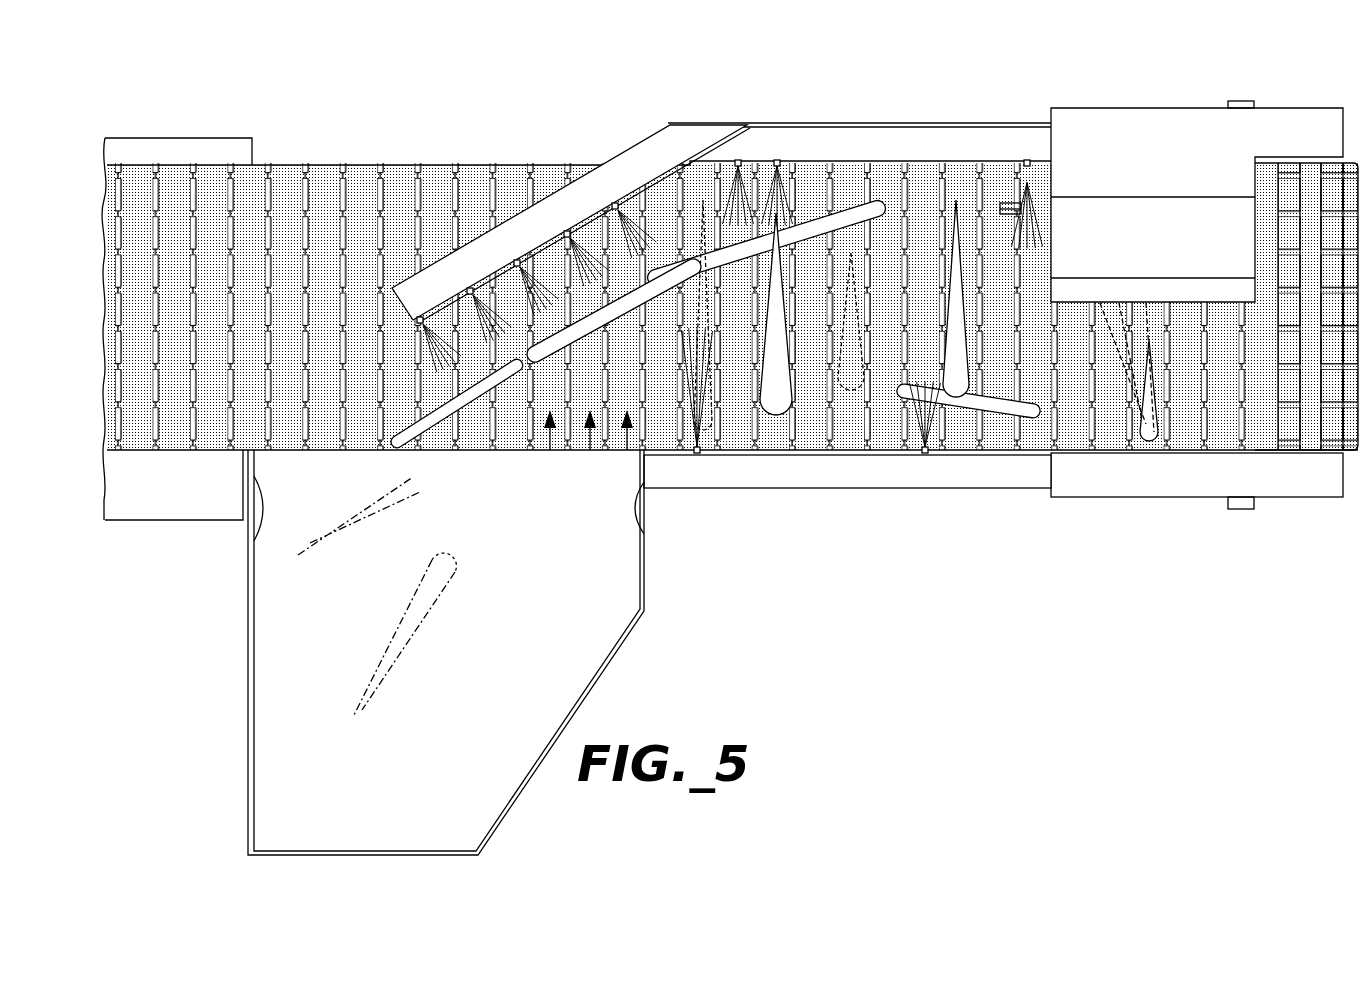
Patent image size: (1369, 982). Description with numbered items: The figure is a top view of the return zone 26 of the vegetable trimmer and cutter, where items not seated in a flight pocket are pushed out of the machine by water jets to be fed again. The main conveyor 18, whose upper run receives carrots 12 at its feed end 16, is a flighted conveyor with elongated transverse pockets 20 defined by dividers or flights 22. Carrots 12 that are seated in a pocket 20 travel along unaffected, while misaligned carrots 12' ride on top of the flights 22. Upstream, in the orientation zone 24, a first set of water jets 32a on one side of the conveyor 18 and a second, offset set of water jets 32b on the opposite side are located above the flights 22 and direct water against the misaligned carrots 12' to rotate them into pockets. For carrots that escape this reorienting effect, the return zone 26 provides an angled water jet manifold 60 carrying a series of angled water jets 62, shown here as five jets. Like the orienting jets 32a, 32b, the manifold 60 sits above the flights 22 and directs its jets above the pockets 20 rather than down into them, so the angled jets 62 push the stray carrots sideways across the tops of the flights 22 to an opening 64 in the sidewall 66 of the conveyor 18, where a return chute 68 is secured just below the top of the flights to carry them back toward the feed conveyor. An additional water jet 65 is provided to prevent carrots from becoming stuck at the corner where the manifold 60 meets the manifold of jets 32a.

The carrots 12 is at (902, 368).
The misaligned carrots 12' is at (501, 485).
The feed end 16 is at (1200, 80).
The main conveyor 18 is at (730, 325).
The pockets 20 is at (627, 450).
The flights 22 is at (375, 193).
The orientation zone 24 is at (870, 151).
The return zone 26 is at (571, 272).
The first set of water jets 32a is at (945, 132).
The second set of water jets 32b is at (843, 472).
The angled water jet manifold 60 is at (553, 207).
The angled water jets 62 is at (570, 242).
The opening 64 is at (252, 544).
The additional water jet 65 is at (744, 160).
The sidewall 66 is at (925, 456).
The return chute 68 is at (272, 654).